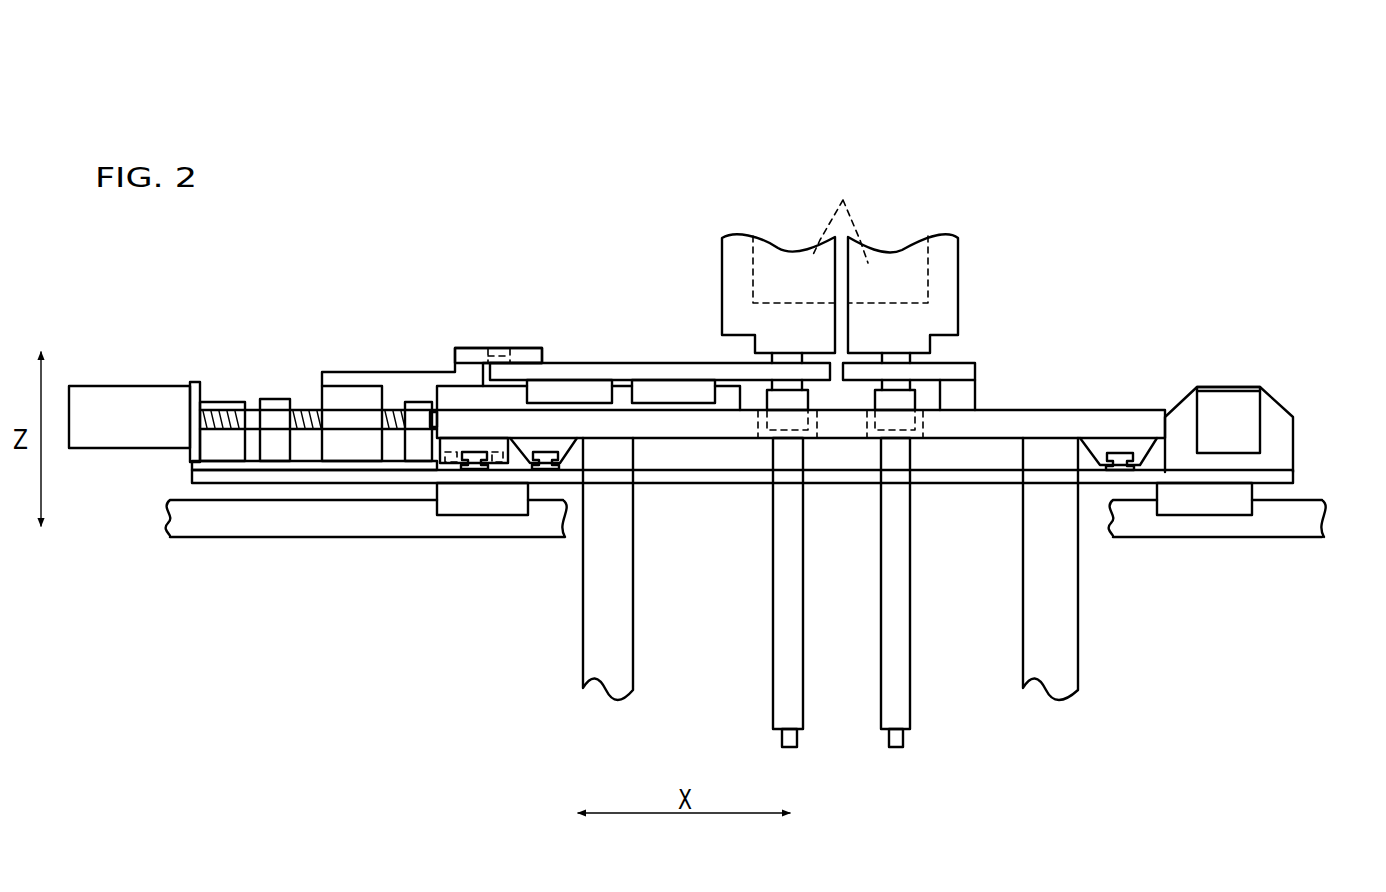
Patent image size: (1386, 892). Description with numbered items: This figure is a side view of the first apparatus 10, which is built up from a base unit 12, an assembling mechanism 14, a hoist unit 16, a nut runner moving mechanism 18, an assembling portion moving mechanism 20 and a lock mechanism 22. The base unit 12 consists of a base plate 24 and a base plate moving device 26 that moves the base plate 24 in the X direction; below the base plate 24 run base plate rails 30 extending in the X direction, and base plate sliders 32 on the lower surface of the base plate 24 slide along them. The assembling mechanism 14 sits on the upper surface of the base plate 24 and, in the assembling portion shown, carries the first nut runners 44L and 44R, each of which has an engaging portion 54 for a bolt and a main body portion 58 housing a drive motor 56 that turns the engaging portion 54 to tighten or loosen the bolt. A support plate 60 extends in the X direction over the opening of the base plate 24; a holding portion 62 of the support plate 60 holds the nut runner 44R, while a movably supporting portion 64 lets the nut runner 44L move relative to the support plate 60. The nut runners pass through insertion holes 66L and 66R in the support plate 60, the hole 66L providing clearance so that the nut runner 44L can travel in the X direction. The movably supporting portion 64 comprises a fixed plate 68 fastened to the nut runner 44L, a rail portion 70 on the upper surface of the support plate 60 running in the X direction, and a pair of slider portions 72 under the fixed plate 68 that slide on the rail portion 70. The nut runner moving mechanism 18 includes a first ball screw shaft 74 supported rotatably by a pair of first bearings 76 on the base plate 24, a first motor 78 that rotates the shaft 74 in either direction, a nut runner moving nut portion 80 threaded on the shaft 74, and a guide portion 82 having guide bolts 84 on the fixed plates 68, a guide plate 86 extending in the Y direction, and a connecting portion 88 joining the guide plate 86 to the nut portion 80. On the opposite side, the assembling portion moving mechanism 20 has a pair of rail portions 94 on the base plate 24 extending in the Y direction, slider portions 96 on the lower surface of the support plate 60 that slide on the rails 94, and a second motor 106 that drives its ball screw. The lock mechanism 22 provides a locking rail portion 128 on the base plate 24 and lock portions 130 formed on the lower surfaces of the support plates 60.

The first apparatus 10 is at (1202, 172).
The base unit 12 is at (1311, 486).
The assembling mechanism 14 is at (1003, 306).
The hoist unit 16 is at (535, 663).
The nut runner moving mechanism 18 is at (268, 372).
The assembling portion moving mechanism 20 is at (1266, 366).
The lock mechanism 22 is at (448, 464).
The base plate 24 is at (190, 473).
The base plate moving device 26 is at (169, 536).
The base plate rail 30 is at (1298, 515).
The base plate slider 32 is at (520, 470).
The first nut runner 44L is at (777, 190).
The first nut runner 44R is at (887, 190).
The engaging portion 54 is at (885, 685).
The drive motor 56 is at (840, 217).
The main body portion 58 is at (740, 240).
The support plate 60 is at (1137, 410).
The holding portion 62 is at (980, 395).
The movably supporting portion 64 is at (615, 342).
The insertion hole 66L is at (812, 438).
The insertion hole 66R is at (917, 438).
The fixed plate 68 is at (705, 356).
The rail portion 70 is at (446, 396).
The slider portion 72 is at (590, 393).
The first ball screw shaft 74 is at (218, 412).
The first bearing 76 is at (285, 407).
The first motor 78 is at (128, 396).
The nut runner moving nut portion 80 is at (343, 447).
The guide portion 82 is at (463, 320).
The guide bolt 84 is at (493, 348).
The guide plate 86 is at (525, 348).
The connecting portion 88 is at (345, 372).
The rail portion 94 is at (547, 460).
The slider portion 96 is at (567, 443).
The second motor 106 is at (1218, 405).
The locking rail portion 128 is at (475, 455).
The lock portion 130 is at (497, 506).